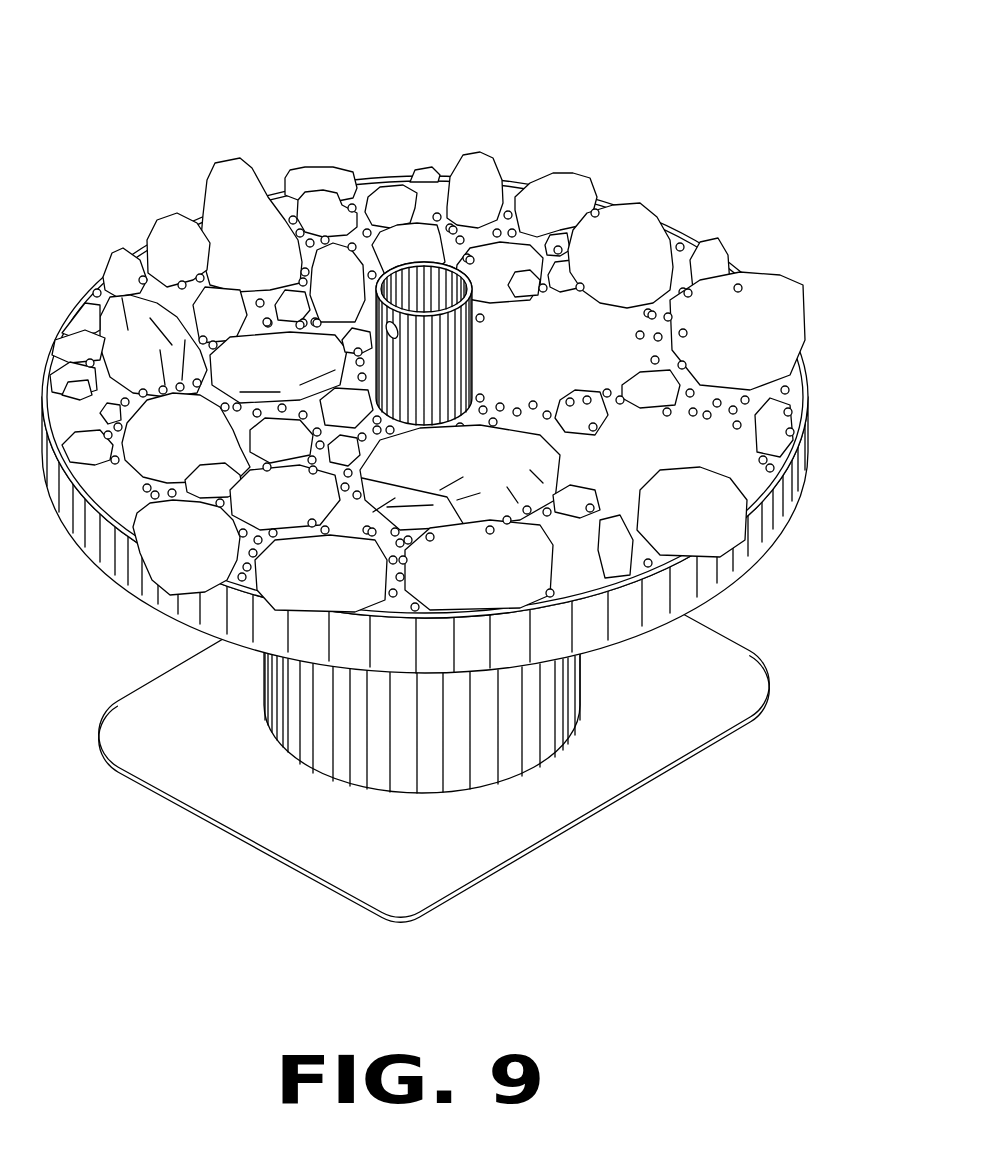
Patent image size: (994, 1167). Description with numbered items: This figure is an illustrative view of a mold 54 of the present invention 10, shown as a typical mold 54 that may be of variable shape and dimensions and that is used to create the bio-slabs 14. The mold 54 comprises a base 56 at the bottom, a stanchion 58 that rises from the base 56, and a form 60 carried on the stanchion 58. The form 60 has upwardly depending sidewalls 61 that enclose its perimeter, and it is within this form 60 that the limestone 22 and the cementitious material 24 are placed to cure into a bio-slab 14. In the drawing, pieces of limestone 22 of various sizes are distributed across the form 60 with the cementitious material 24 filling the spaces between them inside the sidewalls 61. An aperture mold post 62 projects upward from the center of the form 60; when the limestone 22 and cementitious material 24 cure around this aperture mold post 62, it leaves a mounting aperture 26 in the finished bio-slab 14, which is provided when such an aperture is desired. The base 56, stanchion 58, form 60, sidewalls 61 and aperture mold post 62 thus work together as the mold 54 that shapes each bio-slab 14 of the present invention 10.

The present invention 10 is at (456, 464).
The bio-slab 14 is at (427, 354).
The limestone 22 is at (310, 177).
The cementitious material 24 is at (673, 307).
The mounting aperture 26 is at (477, 393).
The mold 54 is at (456, 424).
The base 56 is at (632, 793).
The stanchion 58 is at (265, 689).
The form 60 is at (725, 563).
The sidewalls 61 is at (757, 527).
The aperture mold post 62 is at (418, 261).